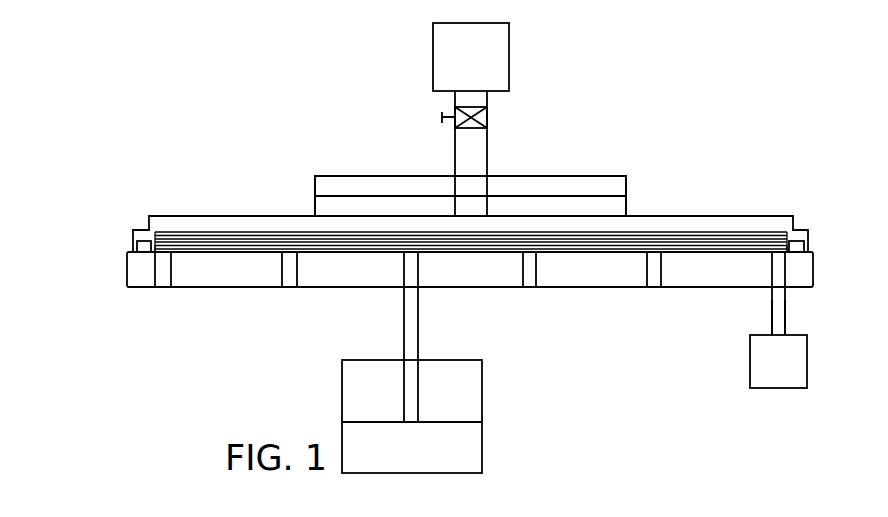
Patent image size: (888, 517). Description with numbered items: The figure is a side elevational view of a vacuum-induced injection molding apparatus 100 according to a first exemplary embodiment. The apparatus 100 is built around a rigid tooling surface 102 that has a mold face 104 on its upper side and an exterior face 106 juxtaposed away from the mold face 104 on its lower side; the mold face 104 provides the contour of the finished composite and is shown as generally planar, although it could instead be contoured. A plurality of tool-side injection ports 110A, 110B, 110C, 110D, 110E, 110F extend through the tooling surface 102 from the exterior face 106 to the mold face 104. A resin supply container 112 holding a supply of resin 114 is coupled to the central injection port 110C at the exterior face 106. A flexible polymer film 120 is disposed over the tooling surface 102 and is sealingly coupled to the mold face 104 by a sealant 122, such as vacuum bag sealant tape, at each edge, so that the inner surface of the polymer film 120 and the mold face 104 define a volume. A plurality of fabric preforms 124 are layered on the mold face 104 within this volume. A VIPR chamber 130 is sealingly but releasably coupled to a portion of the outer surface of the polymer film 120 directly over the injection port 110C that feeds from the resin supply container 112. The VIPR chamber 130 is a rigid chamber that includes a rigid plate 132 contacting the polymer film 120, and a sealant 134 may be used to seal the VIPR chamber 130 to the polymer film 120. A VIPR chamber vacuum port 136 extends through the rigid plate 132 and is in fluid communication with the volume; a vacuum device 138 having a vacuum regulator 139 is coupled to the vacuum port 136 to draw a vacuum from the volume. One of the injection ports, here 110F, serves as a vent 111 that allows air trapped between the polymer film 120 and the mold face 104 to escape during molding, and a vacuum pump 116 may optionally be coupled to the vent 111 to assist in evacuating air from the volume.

The vacuum-induced injection molding apparatus 100 is at (672, 108).
The rigid tooling surface 102 is at (127, 272).
The mold face 104 is at (727, 250).
The exterior face 106 is at (585, 290).
The tool-side injection port 110A is at (160, 290).
The tool-side injection port 110B is at (288, 290).
The tool-side injection port 110C is at (408, 288).
The tool-side injection port 110D is at (530, 290).
The tool-side injection port 110E is at (652, 290).
The tool-side injection port 110F is at (785, 290).
The vent 111 is at (772, 290).
The resin supply container 112 is at (342, 407).
The resin 114 is at (482, 455).
The vacuum pump 116 is at (790, 390).
The flexible polymer film 120 is at (172, 204).
The sealant 122 is at (141, 240).
The fabric preforms 124 is at (222, 235).
The VIPR chamber 130 is at (351, 176).
The rigid plate 132 is at (574, 172).
The sealant 134 is at (315, 215).
The VIPR chamber vacuum port 136 is at (487, 178).
The vacuum device 138 is at (433, 55).
The vacuum regulator 139 is at (450, 107).